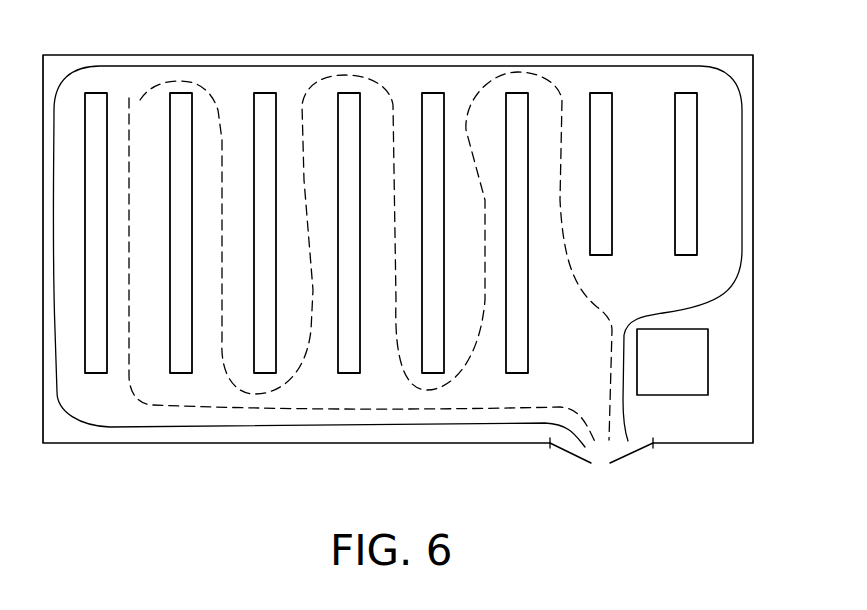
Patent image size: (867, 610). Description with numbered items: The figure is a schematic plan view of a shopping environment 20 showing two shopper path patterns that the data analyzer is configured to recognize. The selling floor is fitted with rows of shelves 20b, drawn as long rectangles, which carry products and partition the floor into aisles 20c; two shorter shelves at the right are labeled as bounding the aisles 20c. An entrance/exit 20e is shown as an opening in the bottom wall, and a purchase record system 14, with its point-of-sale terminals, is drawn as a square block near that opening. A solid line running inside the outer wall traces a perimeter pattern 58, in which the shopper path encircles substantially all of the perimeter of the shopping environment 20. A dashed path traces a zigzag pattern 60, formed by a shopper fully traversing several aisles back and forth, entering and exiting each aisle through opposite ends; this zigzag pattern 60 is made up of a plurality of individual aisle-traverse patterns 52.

The shopping environment 20 is at (617, 54).
The shelves 20b is at (97, 93).
The aisles 20c is at (667, 128).
The entrance/exit 20e is at (550, 464).
The purchase record system 14 is at (730, 344).
The aisle-traverse pattern 52 is at (132, 134).
The perimeter pattern 58 is at (118, 427).
The zigzag pattern 60 is at (194, 416).